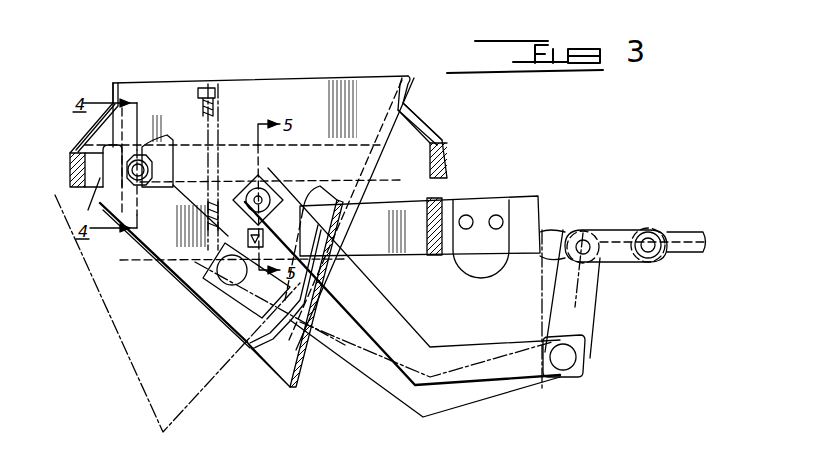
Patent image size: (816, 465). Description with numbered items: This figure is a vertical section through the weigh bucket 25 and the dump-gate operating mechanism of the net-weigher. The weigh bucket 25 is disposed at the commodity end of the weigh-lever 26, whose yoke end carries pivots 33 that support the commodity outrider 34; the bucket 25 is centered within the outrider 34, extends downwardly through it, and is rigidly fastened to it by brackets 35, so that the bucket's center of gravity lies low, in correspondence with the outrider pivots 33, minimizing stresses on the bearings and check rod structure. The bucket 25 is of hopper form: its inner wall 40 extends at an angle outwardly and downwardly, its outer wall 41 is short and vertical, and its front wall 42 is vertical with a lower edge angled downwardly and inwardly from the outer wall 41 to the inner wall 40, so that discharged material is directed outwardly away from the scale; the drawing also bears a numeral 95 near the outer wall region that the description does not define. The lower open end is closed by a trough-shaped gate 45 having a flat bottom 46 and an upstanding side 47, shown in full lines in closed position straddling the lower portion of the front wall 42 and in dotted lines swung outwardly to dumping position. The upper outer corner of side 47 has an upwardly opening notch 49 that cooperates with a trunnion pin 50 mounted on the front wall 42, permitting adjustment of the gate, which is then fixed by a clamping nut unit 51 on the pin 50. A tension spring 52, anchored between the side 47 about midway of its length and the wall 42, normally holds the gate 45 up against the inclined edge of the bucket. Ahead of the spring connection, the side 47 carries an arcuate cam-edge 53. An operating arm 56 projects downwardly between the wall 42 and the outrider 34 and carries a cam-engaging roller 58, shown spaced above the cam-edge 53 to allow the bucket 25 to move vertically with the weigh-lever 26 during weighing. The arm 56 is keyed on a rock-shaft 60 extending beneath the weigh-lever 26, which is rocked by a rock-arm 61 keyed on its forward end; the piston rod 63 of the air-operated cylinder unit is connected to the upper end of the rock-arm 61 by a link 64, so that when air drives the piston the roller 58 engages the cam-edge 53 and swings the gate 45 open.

The weigh bucket 25 is at (168, 68).
The weigh-lever 26 is at (520, 206).
The outrider pivots 33 is at (266, 242).
The commodity outrider 34 is at (449, 144).
The brackets 35 is at (420, 114).
The inner wall 40 is at (405, 82).
The outer wall 41 is at (100, 125).
The front wall 42 is at (298, 88).
The gate 45 is at (227, 303).
The flat bottom 46 is at (292, 387).
The upstanding side 47 is at (260, 353).
The upwardly opening notches 49 is at (165, 142).
The trunnion pins 50 is at (152, 170).
The clamping nut units 51 is at (127, 175).
The tension springs 52 is at (222, 98).
The cam-edge 53 is at (319, 190).
The operating arm 56 is at (460, 378).
The cam-engaging roller 58 is at (268, 182).
The rock-shaft 60 is at (563, 370).
The rock-arm 61 is at (594, 320).
The piston rod 63 is at (678, 233).
The link 64 is at (620, 234).
The flange wall 95 is at (76, 146).